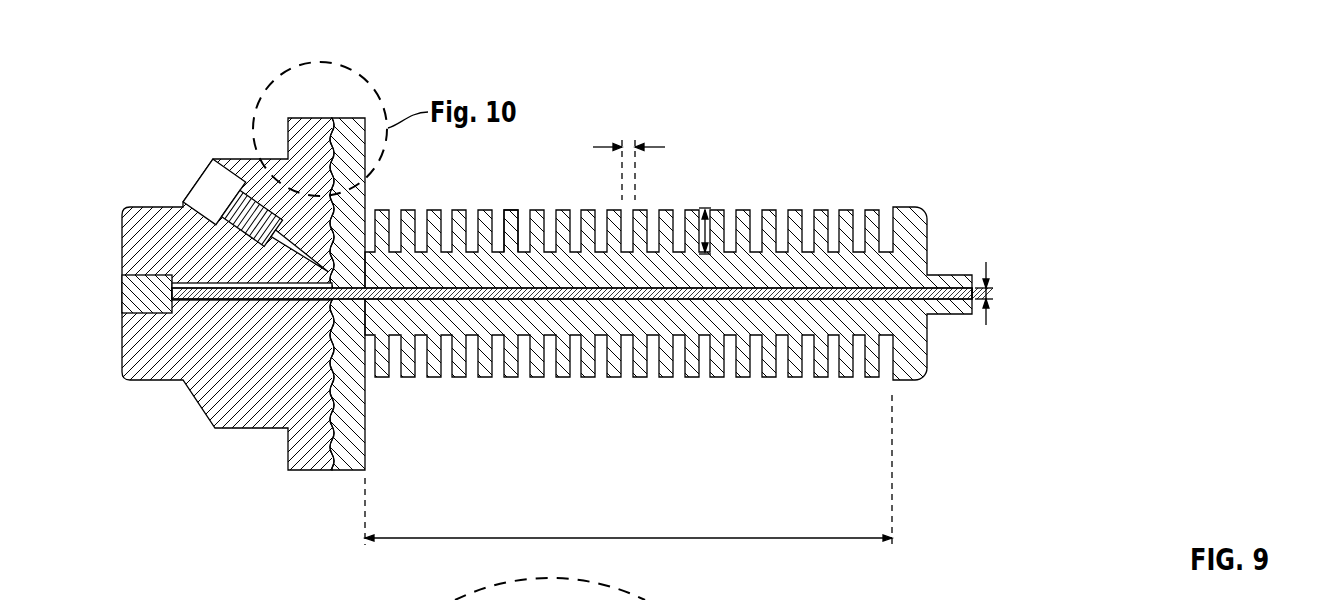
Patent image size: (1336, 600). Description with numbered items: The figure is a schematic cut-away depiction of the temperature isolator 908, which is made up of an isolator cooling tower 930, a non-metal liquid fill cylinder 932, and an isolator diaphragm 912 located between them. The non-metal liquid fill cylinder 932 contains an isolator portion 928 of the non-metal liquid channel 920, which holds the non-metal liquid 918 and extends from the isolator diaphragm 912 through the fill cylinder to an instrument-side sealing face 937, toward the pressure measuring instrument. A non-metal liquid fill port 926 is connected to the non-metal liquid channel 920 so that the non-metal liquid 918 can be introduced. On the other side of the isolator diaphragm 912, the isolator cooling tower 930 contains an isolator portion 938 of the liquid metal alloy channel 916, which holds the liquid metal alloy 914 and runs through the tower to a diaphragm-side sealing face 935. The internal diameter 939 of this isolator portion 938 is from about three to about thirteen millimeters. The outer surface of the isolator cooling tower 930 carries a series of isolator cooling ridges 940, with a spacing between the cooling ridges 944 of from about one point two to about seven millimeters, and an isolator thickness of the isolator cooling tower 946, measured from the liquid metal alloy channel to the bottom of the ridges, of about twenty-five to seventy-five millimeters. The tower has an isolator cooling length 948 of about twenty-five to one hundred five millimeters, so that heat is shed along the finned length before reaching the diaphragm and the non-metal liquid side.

The temperature isolator 908 is at (152, 74).
The isolator diaphragm 912 is at (368, 432).
The liquid metal alloy 914 is at (893, 300).
The liquid metal alloy channel 916 is at (892, 287).
The non-metal liquid 918 is at (260, 300).
The non-metal liquid channel 920 is at (133, 313).
The non-metal liquid fill port 926 is at (200, 178).
The isolator portion of the non-metal liquid channel 928 is at (172, 276).
The isolator cooling tower 930 is at (893, 478).
The non-metal liquid fill cylinder 932 is at (333, 478).
The diaphragm-side sealing face 935 is at (1072, 207).
The instrument-side sealing face 937 is at (118, 207).
The isolator portion of the liquid metal alloy channel 938 is at (350, 298).
The internal diameter 939 is at (987, 286).
The isolator cooling ridges 940 is at (510, 210).
The spacing between the cooling ridges 944 is at (643, 148).
The isolator thickness of the isolator cooling tower 946 is at (708, 232).
The isolator cooling length 948 is at (628, 540).